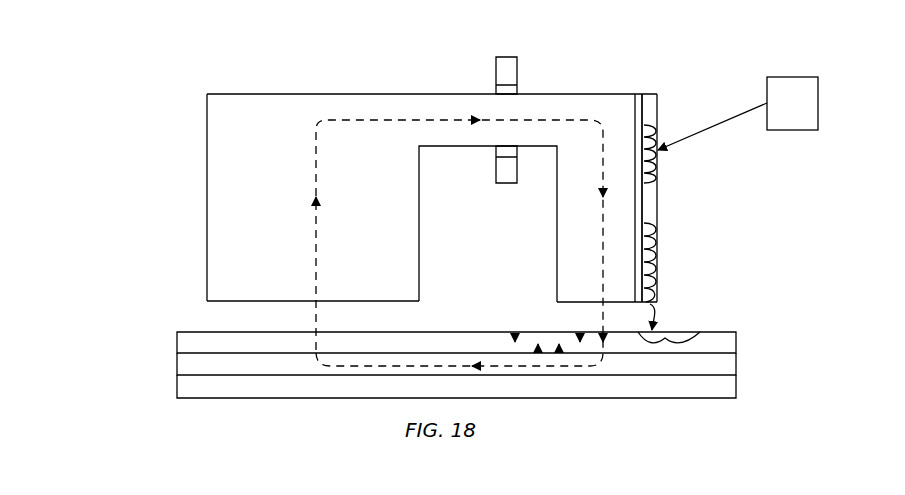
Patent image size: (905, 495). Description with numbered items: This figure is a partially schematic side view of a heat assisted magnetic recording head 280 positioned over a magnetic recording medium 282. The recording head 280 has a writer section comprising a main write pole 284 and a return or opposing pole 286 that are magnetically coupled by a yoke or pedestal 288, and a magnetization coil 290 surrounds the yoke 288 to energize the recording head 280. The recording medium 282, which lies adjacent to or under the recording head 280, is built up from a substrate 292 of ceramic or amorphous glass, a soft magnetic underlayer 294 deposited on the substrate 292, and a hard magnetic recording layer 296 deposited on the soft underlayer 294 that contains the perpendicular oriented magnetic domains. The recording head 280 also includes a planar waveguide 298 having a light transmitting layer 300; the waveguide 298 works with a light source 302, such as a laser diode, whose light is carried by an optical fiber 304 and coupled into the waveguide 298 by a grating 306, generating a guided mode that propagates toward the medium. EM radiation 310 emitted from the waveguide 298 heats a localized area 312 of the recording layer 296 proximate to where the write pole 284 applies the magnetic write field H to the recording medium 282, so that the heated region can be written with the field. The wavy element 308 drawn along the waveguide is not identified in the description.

The heat assisted magnetic recording head 280 is at (185, 94).
The magnetic recording medium 282 is at (160, 331).
The main write pole 284 is at (565, 250).
The return pole 286 is at (207, 203).
The yoke 288 is at (541, 105).
The magnetization coil 290 is at (496, 74).
The substrate 292 is at (185, 388).
The soft magnetic underlayer 294 is at (185, 365).
The hard magnetic recording layer 296 is at (192, 330).
The planar waveguide 298 is at (650, 205).
The light transmitting layer 300 is at (649, 100).
The light source 302 is at (793, 132).
The optical fiber 304 is at (707, 122).
The grating 306 is at (658, 152).
The lower coil 308 is at (632, 268).
The EM radiation 310 is at (657, 312).
The localized area 312 is at (700, 335).
The magnetic write field H is at (316, 157).